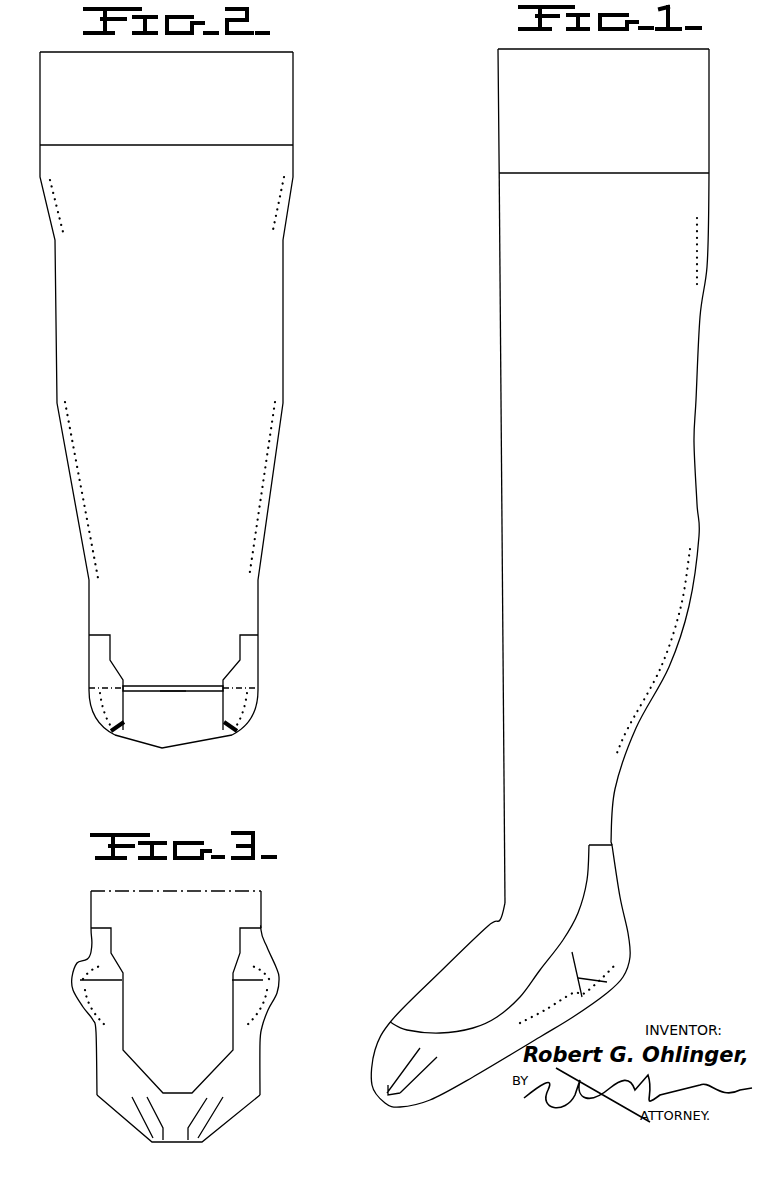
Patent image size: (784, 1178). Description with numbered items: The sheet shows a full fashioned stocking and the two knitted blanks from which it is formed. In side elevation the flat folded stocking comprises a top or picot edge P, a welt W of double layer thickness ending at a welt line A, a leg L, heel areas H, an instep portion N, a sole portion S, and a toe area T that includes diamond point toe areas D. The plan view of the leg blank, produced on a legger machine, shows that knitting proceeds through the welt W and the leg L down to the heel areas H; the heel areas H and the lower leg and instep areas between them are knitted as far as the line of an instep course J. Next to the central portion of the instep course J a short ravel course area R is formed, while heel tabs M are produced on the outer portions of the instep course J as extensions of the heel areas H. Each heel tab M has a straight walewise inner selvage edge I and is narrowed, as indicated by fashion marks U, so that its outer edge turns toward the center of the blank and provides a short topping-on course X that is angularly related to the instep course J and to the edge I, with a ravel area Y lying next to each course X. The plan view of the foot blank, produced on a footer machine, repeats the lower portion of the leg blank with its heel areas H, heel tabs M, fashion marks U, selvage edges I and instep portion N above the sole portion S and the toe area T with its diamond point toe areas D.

In FIG. 1, the top or picot edge P is at (627, 50).
In FIG. 2, the top or picot edge P is at (258, 48).
In FIG. 1, the welt W is at (512, 110).
In FIG. 2, the welt W is at (283, 115).
In FIG. 1, the welt line A is at (580, 173).
In FIG. 2, the welt line A is at (139, 145).
In FIG. 1, the leg L is at (513, 444).
In FIG. 2, the leg L is at (68, 375).
In FIG. 3, the leg L is at (258, 898).
In FIG. 1, the heel areas H is at (603, 863).
In FIG. 2, the heel areas H is at (275, 647).
In FIG. 3, the heel areas H is at (243, 938).
In FIG. 2, the instep course J is at (190, 686).
In FIG. 2, the ravel course area R is at (170, 691).
In FIG. 1, the fashion marks U is at (615, 967).
In FIG. 2, the fashion marks U is at (240, 705).
In FIG. 3, the fashion marks U is at (277, 967).
In FIG. 1, the heel tabs M is at (585, 960).
In FIG. 2, the heel tabs M is at (240, 700).
In FIG. 3, the heel tabs M is at (258, 963).
In FIG. 2, the topping-on courses X is at (238, 733).
In FIG. 1, the inner selvage edges I is at (607, 982).
In FIG. 2, the inner selvage edges I is at (225, 712).
In FIG. 3, the inner selvage edges I is at (275, 983).
In FIG. 2, the ravel areas Y is at (227, 728).
In FIG. 1, the instep portion N is at (475, 940).
In FIG. 3, the instep portion N is at (153, 1022).
In FIG. 1, the sole portion S is at (513, 1033).
In FIG. 3, the sole portion S is at (252, 1050).
In FIG. 1, the diamond point toe areas D is at (393, 1078).
In FIG. 3, the diamond point toe areas D is at (210, 1120).
In FIG. 1, the toe area T is at (430, 1097).
In FIG. 3, the toe area T is at (240, 1098).